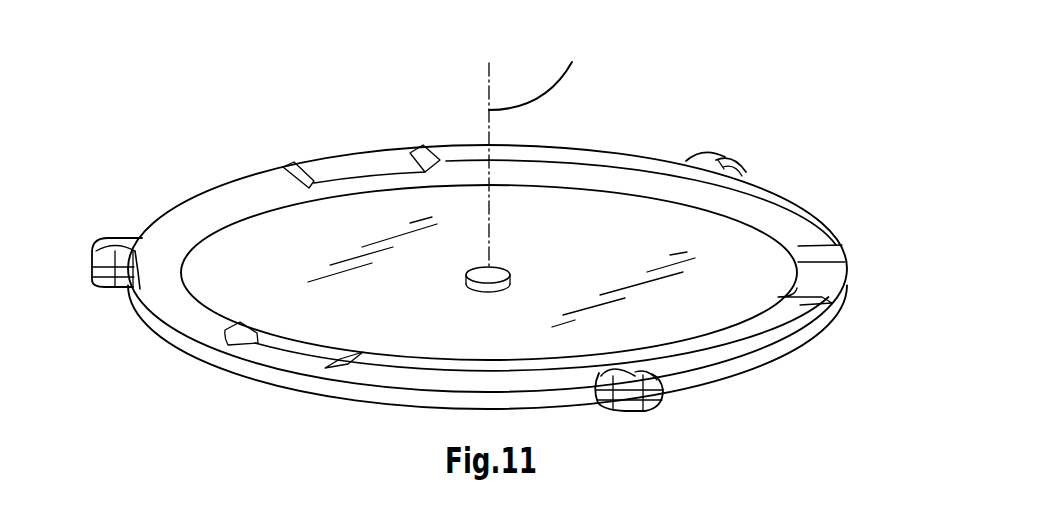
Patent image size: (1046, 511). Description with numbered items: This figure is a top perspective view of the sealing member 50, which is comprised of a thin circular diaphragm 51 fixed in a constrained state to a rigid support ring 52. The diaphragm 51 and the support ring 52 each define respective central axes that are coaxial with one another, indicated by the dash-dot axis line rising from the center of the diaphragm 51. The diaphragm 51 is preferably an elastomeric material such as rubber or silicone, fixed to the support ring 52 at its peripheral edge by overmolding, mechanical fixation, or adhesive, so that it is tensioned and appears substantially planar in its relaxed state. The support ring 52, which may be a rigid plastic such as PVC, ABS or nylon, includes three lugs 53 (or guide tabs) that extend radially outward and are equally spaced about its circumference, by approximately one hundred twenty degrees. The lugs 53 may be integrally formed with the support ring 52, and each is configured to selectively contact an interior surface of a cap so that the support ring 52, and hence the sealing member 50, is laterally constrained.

The sealing member 50 is at (636, 108).
The diaphragm 51 is at (715, 290).
The support ring 52 is at (254, 177).
The lugs 53 is at (128, 250).